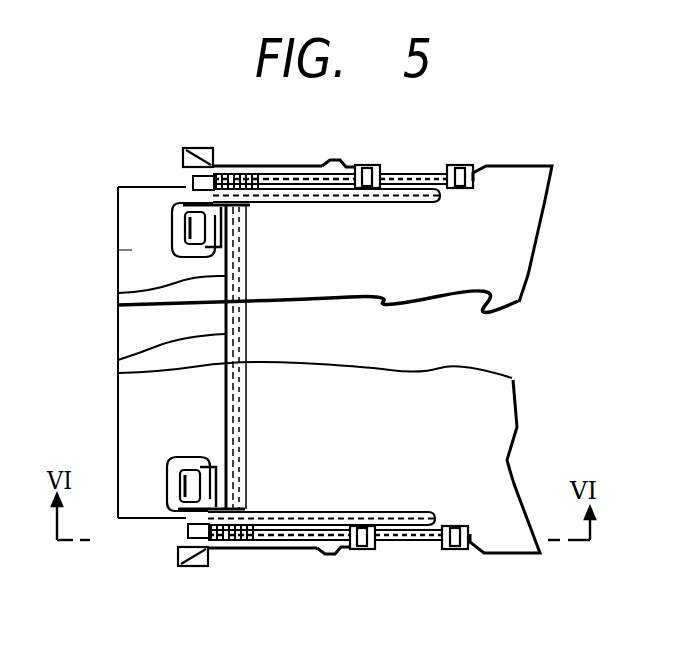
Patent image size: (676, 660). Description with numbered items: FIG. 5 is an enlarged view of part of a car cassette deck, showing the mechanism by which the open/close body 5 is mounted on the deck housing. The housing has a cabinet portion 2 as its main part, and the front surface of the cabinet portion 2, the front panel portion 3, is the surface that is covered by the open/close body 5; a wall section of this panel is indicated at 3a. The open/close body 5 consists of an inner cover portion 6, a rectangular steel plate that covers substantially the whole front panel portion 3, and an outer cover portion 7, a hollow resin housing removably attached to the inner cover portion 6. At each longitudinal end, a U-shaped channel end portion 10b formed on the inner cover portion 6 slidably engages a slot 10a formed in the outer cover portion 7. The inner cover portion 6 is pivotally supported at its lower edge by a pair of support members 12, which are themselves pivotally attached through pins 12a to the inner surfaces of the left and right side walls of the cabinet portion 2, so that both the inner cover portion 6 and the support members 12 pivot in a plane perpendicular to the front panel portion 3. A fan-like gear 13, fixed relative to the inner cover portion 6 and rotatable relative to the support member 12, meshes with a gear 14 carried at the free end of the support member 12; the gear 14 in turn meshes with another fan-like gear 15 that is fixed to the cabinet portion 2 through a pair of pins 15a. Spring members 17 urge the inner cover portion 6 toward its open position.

The cabinet portion 2 is at (530, 165).
The front panel portion 3 is at (126, 352).
The hatched block of wall 3a is at (200, 147).
The open/close body 5 is at (112, 204).
The inner cover portion 6 is at (125, 293).
The outer cover portion 7 is at (130, 243).
The slot 10a is at (187, 215).
The U-shaped channel end portion 10b is at (178, 223).
The support member 12 is at (302, 165).
The pin 12a is at (415, 176).
The fan-like gear 13 is at (233, 170).
The gear 14 is at (264, 164).
The fan-like gear 15 is at (334, 161).
The pin 15a is at (367, 165).
The spring member 17 is at (188, 202).